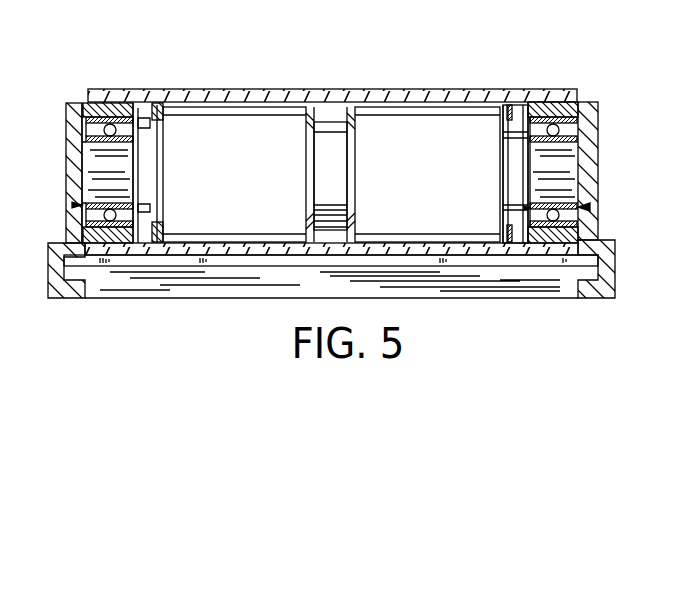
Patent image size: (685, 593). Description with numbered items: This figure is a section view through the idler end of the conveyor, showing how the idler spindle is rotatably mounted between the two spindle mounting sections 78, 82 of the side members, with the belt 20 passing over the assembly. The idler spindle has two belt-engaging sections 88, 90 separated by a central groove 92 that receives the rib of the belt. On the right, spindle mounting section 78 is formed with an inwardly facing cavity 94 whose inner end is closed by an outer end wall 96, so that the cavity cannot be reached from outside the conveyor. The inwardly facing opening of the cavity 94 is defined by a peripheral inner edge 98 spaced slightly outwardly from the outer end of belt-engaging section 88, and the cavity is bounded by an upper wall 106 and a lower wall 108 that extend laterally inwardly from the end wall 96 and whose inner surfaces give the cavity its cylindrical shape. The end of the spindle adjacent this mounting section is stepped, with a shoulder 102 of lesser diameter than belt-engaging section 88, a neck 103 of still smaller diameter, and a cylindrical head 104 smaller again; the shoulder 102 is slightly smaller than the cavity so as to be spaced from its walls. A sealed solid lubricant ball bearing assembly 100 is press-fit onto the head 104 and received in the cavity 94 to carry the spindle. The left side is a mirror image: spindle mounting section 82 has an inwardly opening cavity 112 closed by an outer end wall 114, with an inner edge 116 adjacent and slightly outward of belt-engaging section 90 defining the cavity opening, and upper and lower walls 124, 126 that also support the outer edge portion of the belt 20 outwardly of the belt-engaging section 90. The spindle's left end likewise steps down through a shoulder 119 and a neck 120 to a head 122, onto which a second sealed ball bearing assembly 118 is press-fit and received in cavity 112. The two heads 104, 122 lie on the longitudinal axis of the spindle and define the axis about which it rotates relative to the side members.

The belt 20 is at (242, 82).
The spindle mounting section 78 is at (621, 180).
The spindle mounting section 82 is at (44, 174).
The belt-engaging section 88 is at (425, 120).
The belt-engaging section 90 is at (213, 130).
The groove 92 is at (325, 118).
The cavity 94 is at (513, 118).
The outer end wall 96 is at (600, 157).
The peripheral inner edge 98 is at (510, 115).
The ball bearing assembly 100 is at (592, 207).
The shoulder 102 is at (513, 225).
The neck 103 is at (528, 163).
The cylindrical head 104 is at (560, 176).
The upper wall 106 is at (542, 110).
The lower wall 108 is at (553, 232).
The cavity 112 is at (143, 124).
The outer end wall 114 is at (66, 163).
The inner edge 116 is at (158, 107).
The ball bearing assembly 118 is at (72, 205).
The shoulder 119 is at (148, 226).
The neck 120 is at (135, 173).
The head 122 is at (108, 183).
The upper wall 124 is at (110, 112).
The lower wall 126 is at (118, 237).